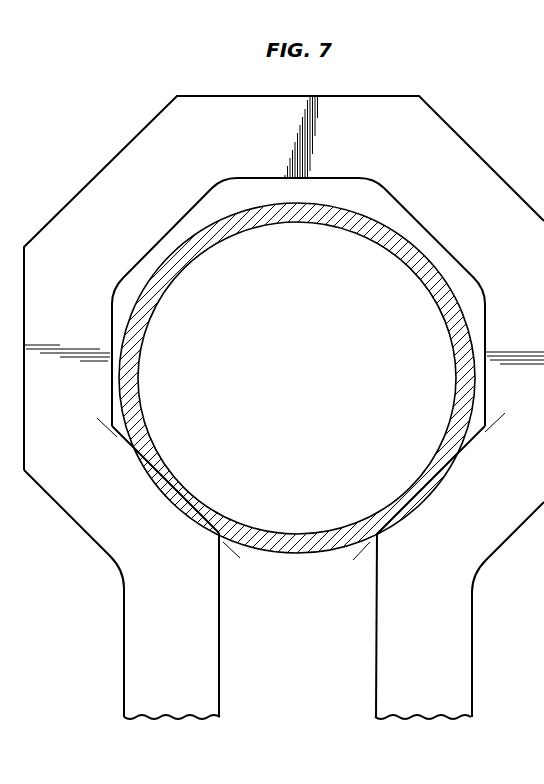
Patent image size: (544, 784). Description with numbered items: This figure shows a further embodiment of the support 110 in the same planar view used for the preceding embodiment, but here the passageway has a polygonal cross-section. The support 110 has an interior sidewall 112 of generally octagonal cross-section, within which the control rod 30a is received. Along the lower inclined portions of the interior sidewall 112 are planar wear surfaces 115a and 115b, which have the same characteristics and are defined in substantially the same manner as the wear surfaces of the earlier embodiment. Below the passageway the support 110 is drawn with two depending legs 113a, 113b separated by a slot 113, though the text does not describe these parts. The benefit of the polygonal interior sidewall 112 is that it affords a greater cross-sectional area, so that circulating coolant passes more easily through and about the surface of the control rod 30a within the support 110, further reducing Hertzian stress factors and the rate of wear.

The support 110 is at (106, 165).
The interior sidewall 112 is at (253, 178).
The control rod 30a is at (163, 290).
The planar wear surface 115a is at (180, 502).
The planar wear surface 115b is at (405, 512).
The left leg of body 113a is at (219, 635).
The right leg of body 113b is at (375, 631).
The slot between legs 113 is at (295, 698).